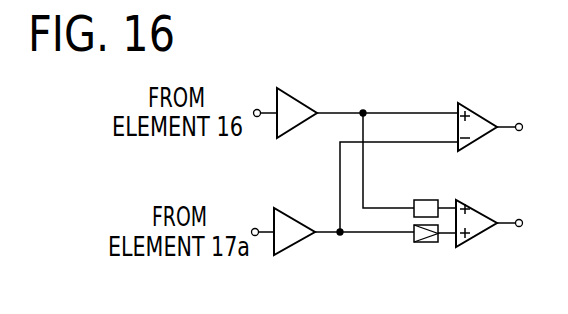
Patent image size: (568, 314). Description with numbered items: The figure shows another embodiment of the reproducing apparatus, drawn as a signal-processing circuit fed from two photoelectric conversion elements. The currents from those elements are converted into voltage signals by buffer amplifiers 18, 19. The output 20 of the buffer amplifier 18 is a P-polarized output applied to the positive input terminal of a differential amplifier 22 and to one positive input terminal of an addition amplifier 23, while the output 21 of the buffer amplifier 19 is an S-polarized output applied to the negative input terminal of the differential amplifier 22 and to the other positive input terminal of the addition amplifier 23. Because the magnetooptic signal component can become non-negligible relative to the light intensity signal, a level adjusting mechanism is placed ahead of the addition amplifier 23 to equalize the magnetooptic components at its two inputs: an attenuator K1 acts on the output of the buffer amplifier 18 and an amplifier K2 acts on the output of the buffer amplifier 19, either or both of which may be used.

The buffer amplifier 18 is at (295, 93).
The buffer amplifier 19 is at (293, 214).
The output of the buffer amplifier 18 20 is at (386, 113).
The output of the buffer amplifier 19 21 is at (358, 238).
The differential amplifier 22 is at (473, 110).
The addition amplifier 23 is at (473, 205).
The attenuator K1 is at (425, 200).
The amplifier K2 is at (425, 243).